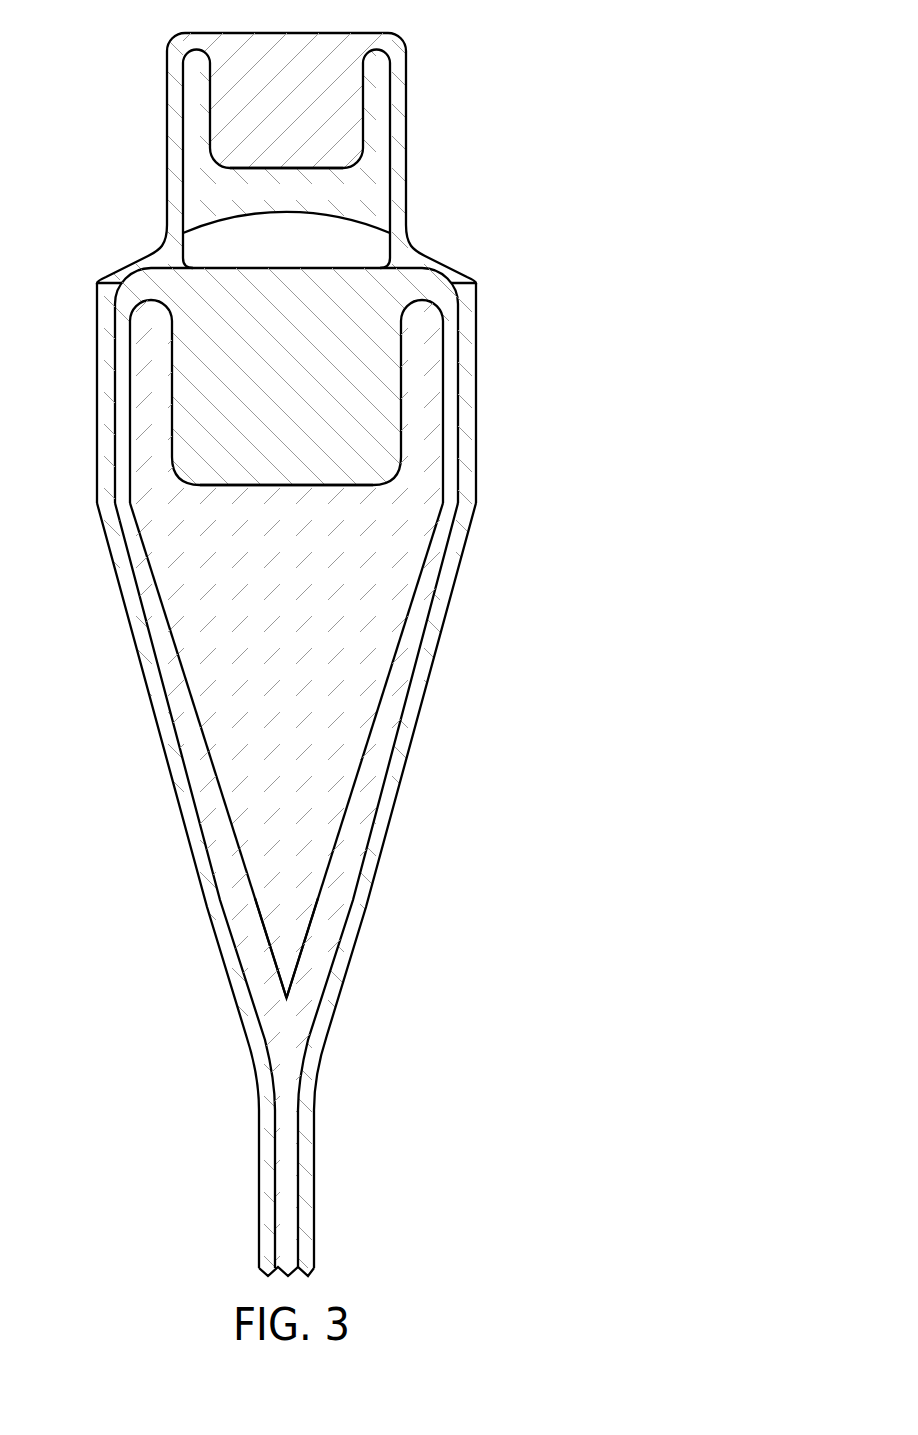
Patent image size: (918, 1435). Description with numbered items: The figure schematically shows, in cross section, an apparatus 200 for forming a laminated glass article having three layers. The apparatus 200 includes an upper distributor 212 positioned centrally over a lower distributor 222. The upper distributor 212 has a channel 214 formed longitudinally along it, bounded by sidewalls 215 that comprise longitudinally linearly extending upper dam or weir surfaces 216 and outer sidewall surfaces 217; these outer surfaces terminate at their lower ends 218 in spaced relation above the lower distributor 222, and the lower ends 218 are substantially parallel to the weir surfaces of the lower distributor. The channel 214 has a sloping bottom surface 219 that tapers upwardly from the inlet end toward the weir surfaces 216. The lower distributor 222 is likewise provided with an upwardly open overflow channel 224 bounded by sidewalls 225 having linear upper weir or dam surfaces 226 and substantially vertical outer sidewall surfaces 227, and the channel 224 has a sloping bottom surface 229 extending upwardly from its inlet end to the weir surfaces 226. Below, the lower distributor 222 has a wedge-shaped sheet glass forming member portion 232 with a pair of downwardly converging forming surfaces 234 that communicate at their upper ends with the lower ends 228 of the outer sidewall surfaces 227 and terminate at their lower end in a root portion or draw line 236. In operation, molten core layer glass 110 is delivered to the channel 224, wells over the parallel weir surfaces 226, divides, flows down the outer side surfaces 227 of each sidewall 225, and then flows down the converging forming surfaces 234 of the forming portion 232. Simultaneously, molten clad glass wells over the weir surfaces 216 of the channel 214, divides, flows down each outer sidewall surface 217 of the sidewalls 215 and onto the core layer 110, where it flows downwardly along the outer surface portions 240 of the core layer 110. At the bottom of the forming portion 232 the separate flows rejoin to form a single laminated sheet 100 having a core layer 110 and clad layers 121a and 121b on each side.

The apparatus 200 is at (530, 83).
The upper distributor 212 is at (380, 203).
The channel 214 is at (285, 60).
The sidewalls 215 is at (193, 107).
The upper dam or weir surfaces 216 is at (187, 33).
The outer sidewall surfaces 217 is at (183, 152).
The lower ends 218 is at (410, 242).
The sloping bottom surface 219 is at (288, 168).
The lower distributor 222 is at (412, 490).
The overflow channel 224 is at (368, 387).
The sidewalls 225 is at (150, 388).
The upper weir or dam surfaces 226 is at (100, 281).
The outer sidewall surfaces 227 is at (128, 342).
The lower ends 228 is at (128, 503).
The sloping bottom surface 229 is at (288, 485).
The wedge-shaped sheet glass forming member portion 232 is at (372, 632).
The converging forming surfaces 234 is at (240, 858).
The root portion or draw line 236 is at (287, 998).
The outer surface portions 240 is at (437, 578).
The laminated sheet 100 is at (288, 1145).
The core layer glass 110 is at (393, 690).
The clad layer 121a is at (412, 742).
The clad layer 121b is at (152, 742).